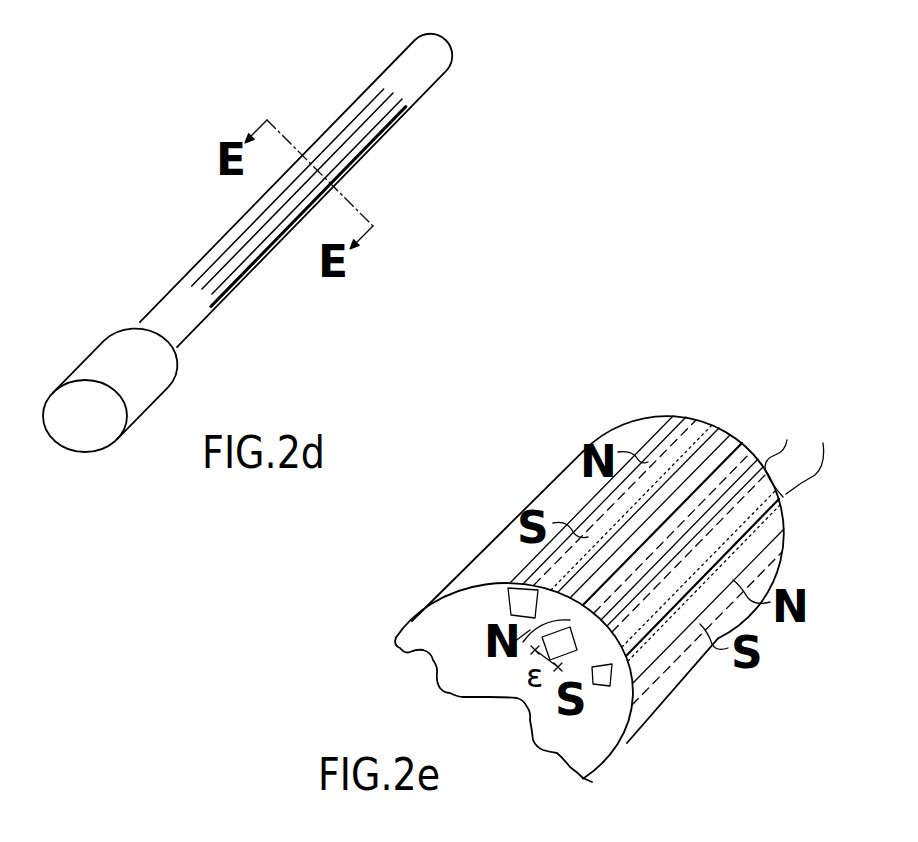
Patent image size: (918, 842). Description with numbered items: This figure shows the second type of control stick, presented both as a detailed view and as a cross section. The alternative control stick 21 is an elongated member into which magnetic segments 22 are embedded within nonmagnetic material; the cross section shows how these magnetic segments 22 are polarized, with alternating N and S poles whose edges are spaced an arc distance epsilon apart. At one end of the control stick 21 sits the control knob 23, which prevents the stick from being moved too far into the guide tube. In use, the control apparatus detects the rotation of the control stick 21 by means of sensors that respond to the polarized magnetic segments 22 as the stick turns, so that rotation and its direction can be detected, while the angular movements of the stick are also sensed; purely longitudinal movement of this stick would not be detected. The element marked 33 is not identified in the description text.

In FIG. 2d, the control stick 21 is at (411, 62).
In FIG. 2e, the control stick 21 is at (556, 496).
In FIG. 2d, the magnetic segments 22 is at (229, 245).
In FIG. 2e, the magnetic segments 22 is at (730, 423).
In FIG. 2d, the control knob 23 is at (112, 357).
In FIG. 2e, the magnet segment 33 is at (668, 440).